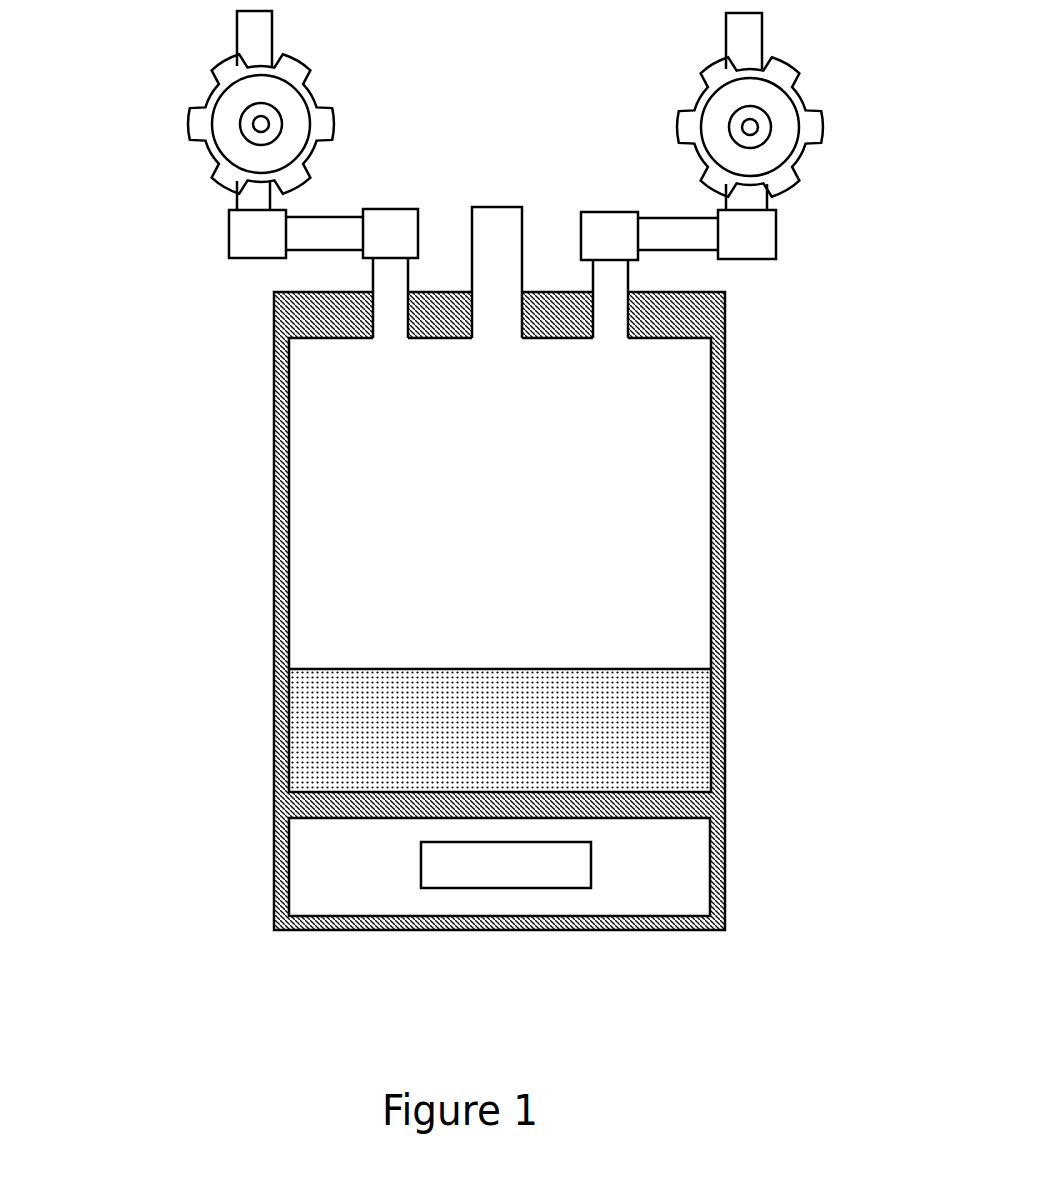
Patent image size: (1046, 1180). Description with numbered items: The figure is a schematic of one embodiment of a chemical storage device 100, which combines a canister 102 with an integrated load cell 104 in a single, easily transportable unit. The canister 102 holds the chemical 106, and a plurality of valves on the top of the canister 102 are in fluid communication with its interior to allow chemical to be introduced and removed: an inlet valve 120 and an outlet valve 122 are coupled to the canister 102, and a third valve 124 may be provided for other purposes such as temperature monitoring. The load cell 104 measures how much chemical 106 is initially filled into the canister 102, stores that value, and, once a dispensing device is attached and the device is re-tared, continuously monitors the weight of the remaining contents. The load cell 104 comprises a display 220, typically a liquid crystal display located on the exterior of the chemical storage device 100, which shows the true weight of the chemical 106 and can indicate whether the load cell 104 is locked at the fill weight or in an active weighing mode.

The chemical storage device 100 is at (806, 541).
The canister 102 is at (274, 568).
The load cell 104 is at (725, 875).
The chemical 106 is at (313, 727).
The inlet valve 120 is at (210, 162).
The outlet valve 122 is at (792, 163).
The third valve 124 is at (512, 207).
The display 220 is at (433, 888).